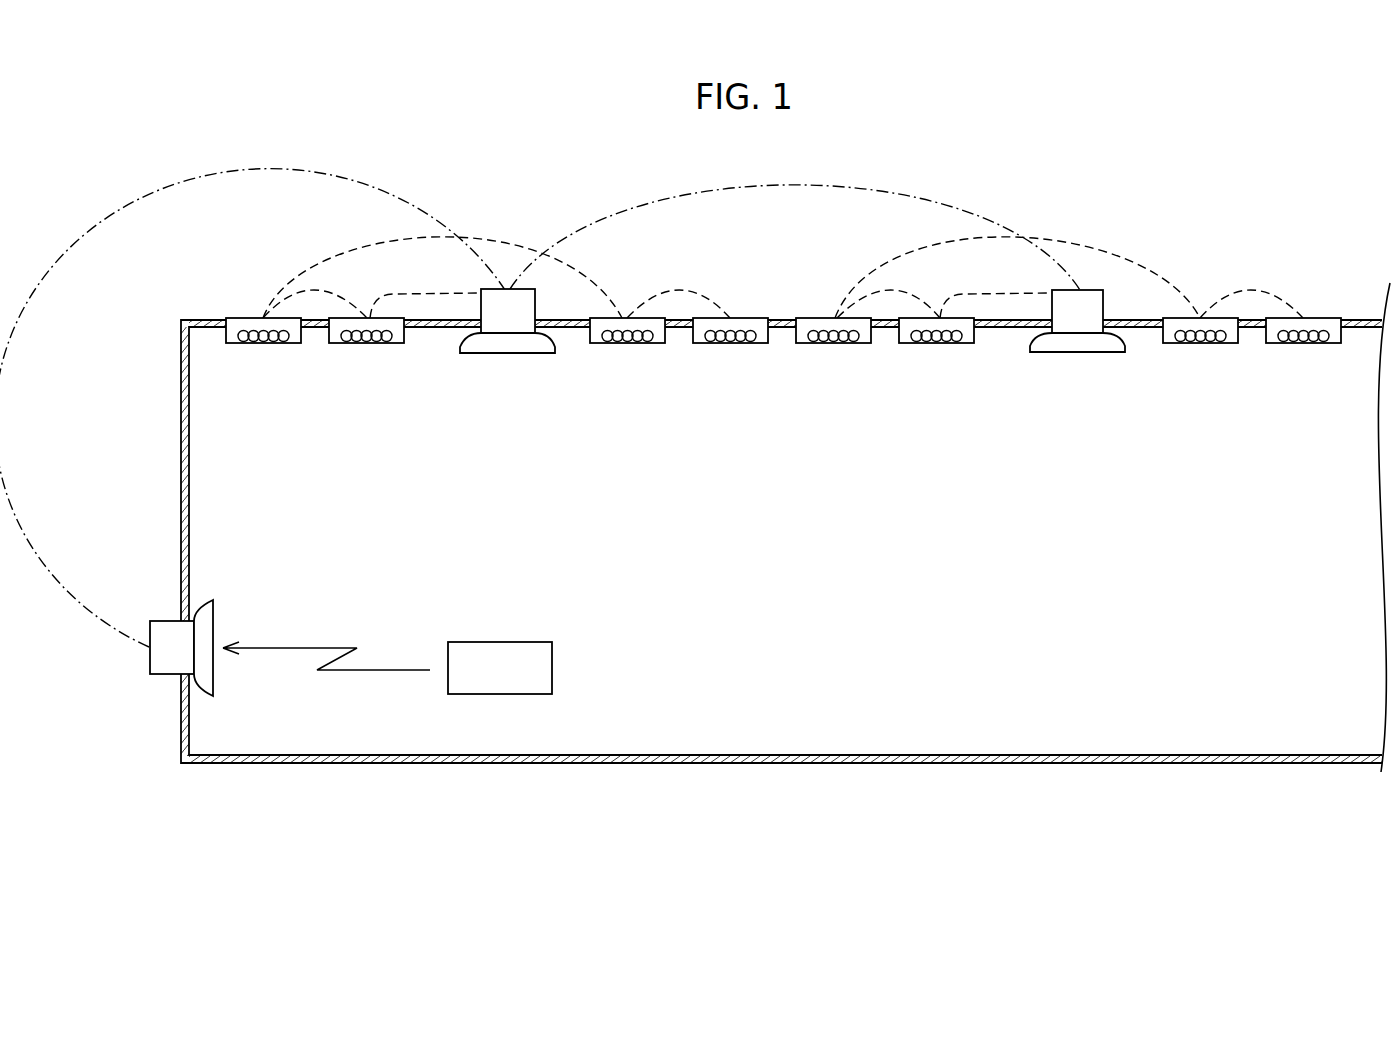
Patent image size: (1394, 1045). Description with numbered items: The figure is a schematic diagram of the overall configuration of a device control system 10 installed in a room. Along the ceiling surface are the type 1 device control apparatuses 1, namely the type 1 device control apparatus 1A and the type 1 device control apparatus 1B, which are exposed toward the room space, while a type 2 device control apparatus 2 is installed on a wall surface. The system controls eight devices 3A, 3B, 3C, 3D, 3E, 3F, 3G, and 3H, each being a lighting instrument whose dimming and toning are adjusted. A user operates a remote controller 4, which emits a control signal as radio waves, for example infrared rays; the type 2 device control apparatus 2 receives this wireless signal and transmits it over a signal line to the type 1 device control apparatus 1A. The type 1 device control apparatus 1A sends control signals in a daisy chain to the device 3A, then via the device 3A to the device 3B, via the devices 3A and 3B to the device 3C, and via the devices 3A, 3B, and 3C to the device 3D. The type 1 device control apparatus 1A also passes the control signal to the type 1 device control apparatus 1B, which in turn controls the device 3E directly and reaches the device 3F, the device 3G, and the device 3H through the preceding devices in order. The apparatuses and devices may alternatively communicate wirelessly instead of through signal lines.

The device control system 10 is at (1096, 196).
The type 1 device control apparatuses 1 is at (792, 394).
The type 1 device control apparatus 1A is at (505, 354).
The type 1 device control apparatus 1B is at (1077, 365).
The type 2 device control apparatus 2 is at (214, 625).
The device 3A is at (366, 344).
The device 3B is at (263, 344).
The device 3C is at (627, 344).
The device 3D is at (730, 344).
The device 3E is at (936, 344).
The device 3F is at (833, 344).
The device 3G is at (1200, 344).
The device 3H is at (1303, 344).
The remote controller 4 is at (500, 641).